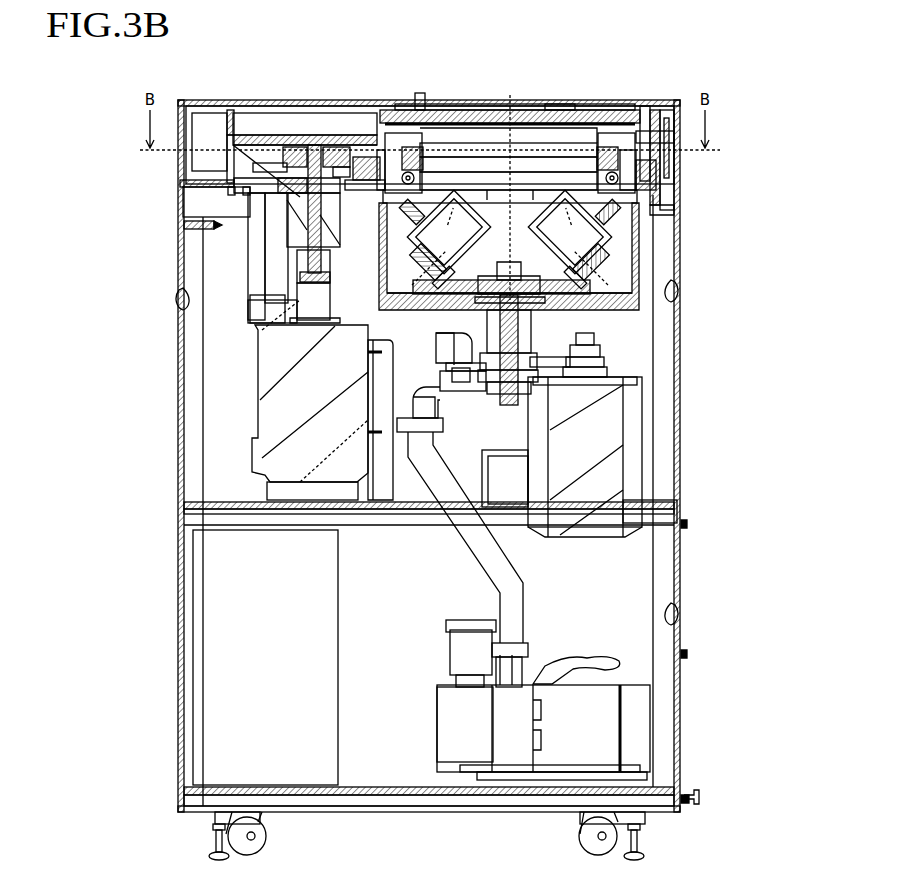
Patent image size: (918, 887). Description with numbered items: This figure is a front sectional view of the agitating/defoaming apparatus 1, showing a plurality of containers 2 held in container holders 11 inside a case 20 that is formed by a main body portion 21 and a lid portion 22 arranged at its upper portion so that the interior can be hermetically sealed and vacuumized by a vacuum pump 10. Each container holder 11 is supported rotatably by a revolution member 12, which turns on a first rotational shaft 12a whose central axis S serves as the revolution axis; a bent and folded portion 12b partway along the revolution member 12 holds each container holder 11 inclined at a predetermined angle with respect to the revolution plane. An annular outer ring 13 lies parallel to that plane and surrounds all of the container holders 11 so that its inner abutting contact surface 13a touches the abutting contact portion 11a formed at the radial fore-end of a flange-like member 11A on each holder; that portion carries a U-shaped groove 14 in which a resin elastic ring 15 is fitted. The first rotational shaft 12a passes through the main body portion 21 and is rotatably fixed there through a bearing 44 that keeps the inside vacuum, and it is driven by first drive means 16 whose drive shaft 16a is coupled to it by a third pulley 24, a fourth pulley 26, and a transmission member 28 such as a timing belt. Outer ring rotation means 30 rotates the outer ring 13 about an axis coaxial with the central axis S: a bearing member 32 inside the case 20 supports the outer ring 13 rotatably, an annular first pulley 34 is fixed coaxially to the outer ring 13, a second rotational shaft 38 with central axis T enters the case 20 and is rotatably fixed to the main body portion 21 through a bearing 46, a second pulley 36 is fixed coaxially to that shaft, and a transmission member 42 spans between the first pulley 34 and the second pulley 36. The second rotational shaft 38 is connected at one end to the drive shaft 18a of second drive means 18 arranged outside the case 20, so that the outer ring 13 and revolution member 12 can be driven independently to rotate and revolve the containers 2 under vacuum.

The agitating/defoaming apparatus 1 is at (686, 92).
The container 2 is at (398, 248).
The vacuum pump 10 is at (620, 735).
The container holder 11 is at (398, 232).
The flange-like member 11A is at (470, 140).
The abutting contact portion 11a is at (486, 254).
The revolution member 12 is at (640, 298).
The first rotational shaft 12a is at (630, 318).
The bent and folded portion 12b is at (572, 275).
The outer ring 13 is at (435, 133).
The abutting contact surface 13a is at (583, 133).
The U-shaped groove 14 is at (455, 313).
The resin elastic ring 15 is at (498, 252).
The first drive means 16 is at (615, 440).
The drive shaft 16a is at (615, 350).
The second drive means 18 is at (290, 385).
The drive shaft 18a is at (265, 290).
The case 20 is at (676, 44).
The main body portion 21 is at (668, 125).
The lid portion 22 is at (630, 125).
The third pulley 24 is at (610, 375).
The fourth pulley 26 is at (492, 400).
The transmission member 28 is at (598, 400).
The outer ring rotation means 30 is at (290, 136).
The bearing member 32 is at (372, 140).
The first pulley 34 is at (376, 145).
The second pulley 36 is at (314, 150).
The second rotational shaft 38 is at (300, 225).
The transmission member 42 is at (360, 148).
The bearing 44 is at (437, 350).
The bearing 46 is at (235, 225).
The central axis T is at (320, 136).
The central axis S is at (519, 138).